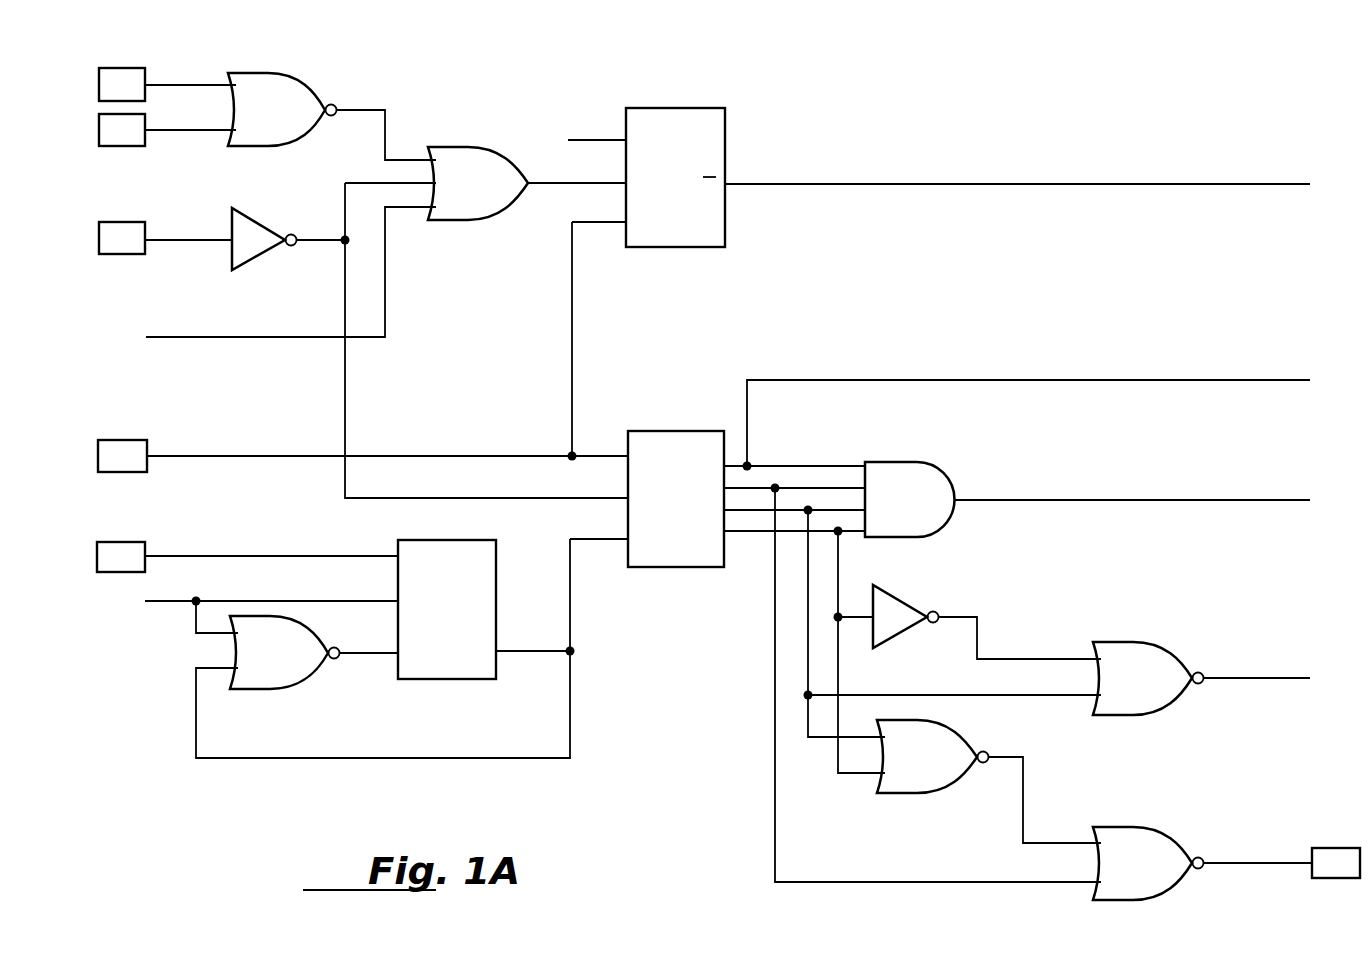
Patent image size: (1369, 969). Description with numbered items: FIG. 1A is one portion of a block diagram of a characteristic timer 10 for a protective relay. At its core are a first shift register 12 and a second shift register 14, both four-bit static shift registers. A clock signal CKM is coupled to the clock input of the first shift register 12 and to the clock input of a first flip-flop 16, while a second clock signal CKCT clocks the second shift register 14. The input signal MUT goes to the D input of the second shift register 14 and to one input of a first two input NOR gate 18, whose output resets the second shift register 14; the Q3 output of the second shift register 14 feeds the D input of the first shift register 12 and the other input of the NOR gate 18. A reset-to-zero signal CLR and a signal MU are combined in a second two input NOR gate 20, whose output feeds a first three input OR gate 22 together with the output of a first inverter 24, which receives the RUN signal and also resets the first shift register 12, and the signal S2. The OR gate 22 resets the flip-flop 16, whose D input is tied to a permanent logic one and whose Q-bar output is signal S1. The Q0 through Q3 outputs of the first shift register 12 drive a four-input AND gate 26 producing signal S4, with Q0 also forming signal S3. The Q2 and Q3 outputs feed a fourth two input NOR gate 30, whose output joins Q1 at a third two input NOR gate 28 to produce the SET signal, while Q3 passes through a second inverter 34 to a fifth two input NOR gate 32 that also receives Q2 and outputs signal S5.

The characteristic timer 10 is at (1110, 120).
The first shift register 12 is at (674, 436).
The second shift register 14 is at (488, 573).
The first flip-flop 16 is at (718, 137).
The first two input NOR gate 18 is at (302, 670).
The second two input NOR gate 20 is at (305, 92).
The first three input OR gate 22 is at (470, 155).
The first inverter 24 is at (255, 227).
The first 4-input AND gate 26 is at (936, 480).
The third two input NOR gate 28 is at (1165, 847).
The fourth two input NOR gate 30 is at (958, 748).
The fifth two input NOR gate 32 is at (1158, 657).
The second inverter 34 is at (898, 606).